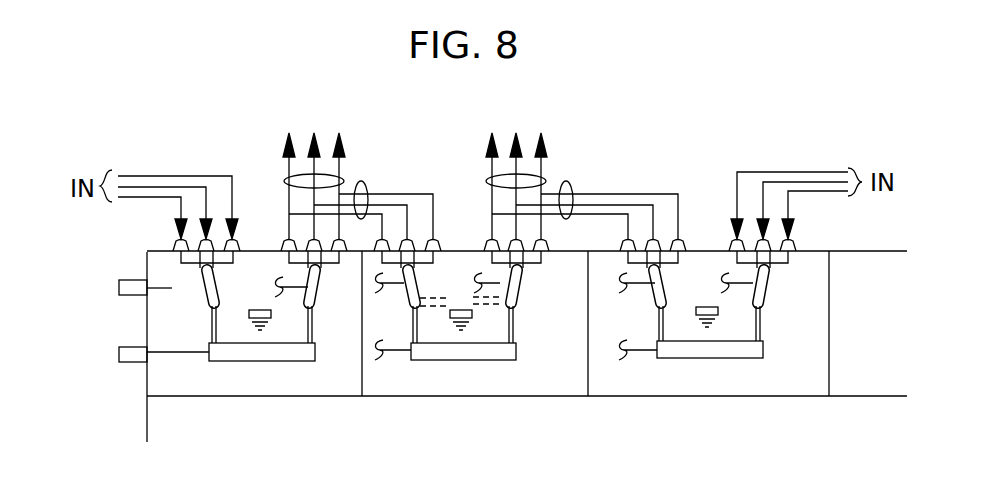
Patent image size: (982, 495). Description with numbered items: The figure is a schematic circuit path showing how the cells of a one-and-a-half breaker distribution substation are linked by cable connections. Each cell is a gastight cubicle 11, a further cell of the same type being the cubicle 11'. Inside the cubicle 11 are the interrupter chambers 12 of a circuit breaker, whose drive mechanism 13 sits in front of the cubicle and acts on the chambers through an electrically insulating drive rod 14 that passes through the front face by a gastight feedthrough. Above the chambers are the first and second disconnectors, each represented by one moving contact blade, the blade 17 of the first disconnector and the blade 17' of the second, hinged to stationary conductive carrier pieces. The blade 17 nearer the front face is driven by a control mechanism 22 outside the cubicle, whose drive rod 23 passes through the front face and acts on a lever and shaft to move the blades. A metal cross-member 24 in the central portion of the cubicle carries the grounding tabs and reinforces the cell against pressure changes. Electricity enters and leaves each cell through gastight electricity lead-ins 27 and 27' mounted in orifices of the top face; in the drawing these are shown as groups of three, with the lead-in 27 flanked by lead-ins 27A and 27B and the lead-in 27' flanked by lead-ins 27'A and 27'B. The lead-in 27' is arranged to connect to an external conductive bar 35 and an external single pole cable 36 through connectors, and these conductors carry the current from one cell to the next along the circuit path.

The cubicle 11 is at (479, 346).
The cubicle cell 11' is at (475, 357).
The interrupter chambers 12 is at (281, 361).
The circuit breaker drive mechanism 13 is at (119, 356).
The drive rod 14 is at (185, 353).
The moving contact blade 17 is at (193, 357).
The moving contact blade 17' is at (332, 357).
The control mechanism 22 is at (119, 290).
The drive rod 23 is at (172, 288).
The metal cross-member 24 is at (258, 322).
The electricity lead-in 27 is at (198, 198).
The left input connector 27A is at (175, 246).
The right input connector 27B is at (237, 248).
The electricity lead-in 27' is at (781, 196).
The second left input connector 27'A is at (697, 190).
The second right input connector 27'B is at (828, 232).
The external conductive bar 35 is at (367, 190).
The external single pole cable 36 is at (343, 182).